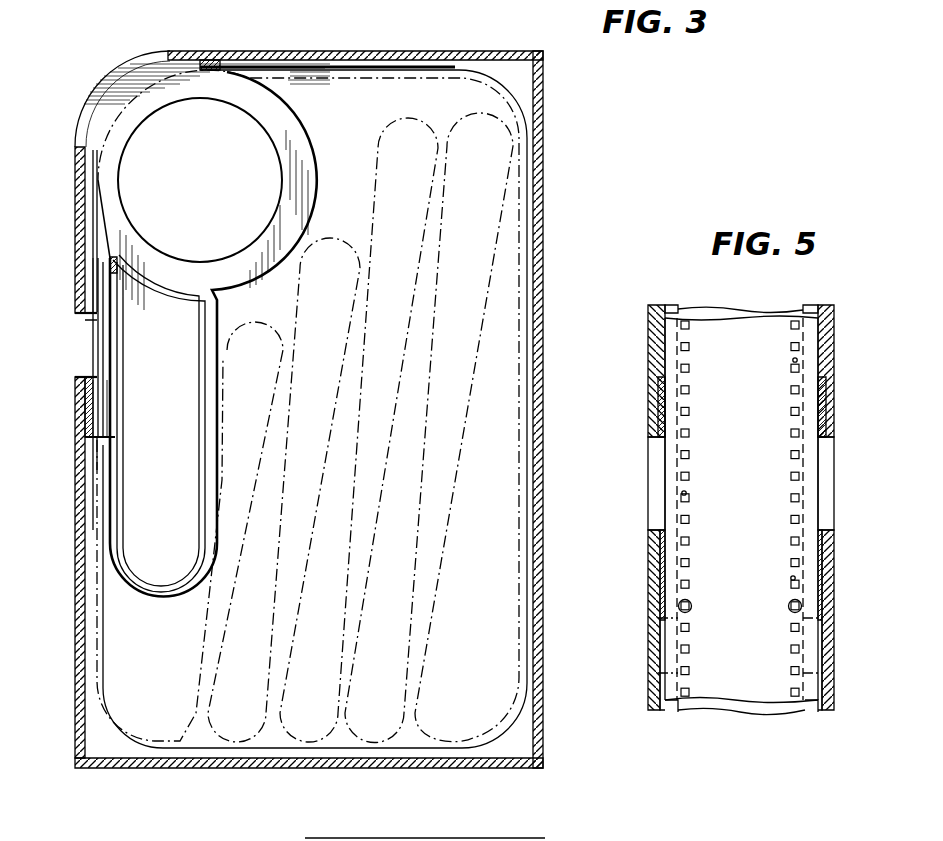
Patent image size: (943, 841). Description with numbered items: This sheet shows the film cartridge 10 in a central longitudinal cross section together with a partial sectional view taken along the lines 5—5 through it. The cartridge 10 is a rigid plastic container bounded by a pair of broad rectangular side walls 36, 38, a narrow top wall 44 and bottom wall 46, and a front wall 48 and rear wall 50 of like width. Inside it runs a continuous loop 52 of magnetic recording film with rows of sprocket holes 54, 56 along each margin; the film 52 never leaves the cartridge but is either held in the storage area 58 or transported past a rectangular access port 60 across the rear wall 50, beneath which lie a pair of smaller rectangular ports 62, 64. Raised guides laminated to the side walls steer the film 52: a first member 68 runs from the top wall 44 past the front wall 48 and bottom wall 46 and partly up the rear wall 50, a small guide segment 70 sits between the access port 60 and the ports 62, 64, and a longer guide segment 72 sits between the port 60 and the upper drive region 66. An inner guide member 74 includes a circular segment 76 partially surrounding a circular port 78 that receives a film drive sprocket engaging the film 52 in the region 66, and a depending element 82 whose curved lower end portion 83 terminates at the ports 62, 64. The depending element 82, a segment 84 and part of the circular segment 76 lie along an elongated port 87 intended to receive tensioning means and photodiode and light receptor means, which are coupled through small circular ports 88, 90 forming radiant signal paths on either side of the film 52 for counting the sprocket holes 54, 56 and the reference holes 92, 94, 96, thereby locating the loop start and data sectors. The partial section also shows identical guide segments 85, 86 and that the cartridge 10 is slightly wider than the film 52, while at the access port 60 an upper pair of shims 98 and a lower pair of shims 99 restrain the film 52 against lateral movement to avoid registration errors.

In FIG. 3, the upper drive region 66 is at (113, 70).
In FIG. 3, the top wall 44 is at (322, 52).
In FIG. 3, the storage area 58 is at (423, 84).
In FIG. 3, the circular segment 76 is at (258, 117).
In FIG. 3, the circular port 78 is at (267, 165).
In FIG. 3, the inner guide member 74 is at (245, 248).
In FIG. 3, the first member 68 is at (528, 249).
In FIG. 3, the front wall 48 is at (541, 377).
In FIG. 3, the guide segment 72 is at (86, 258).
In FIG. 3, the access port 60 is at (86, 337).
In FIG. 3, the guide segment 70 is at (86, 392).
In FIG. 3, the rectangular port 62 is at (87, 450).
In FIG. 5, the rectangular port 62 is at (642, 648).
In FIG. 3, the rear wall 50 is at (76, 630).
In FIG. 3, the bottom wall 46 is at (279, 769).
In FIG. 3, the continuous loop of magnetic recording film 52 is at (100, 333).
In FIG. 5, the continuous loop of magnetic recording film 52 is at (738, 688).
In FIG. 3, the segment 84 is at (104, 363).
In FIG. 5, the segment 84 is at (811, 305).
In FIG. 3, the small circular port 90 is at (107, 412).
In FIG. 5, the small circular port 90 is at (788, 607).
In FIG. 3, the depending element 82 is at (212, 422).
In FIG. 5, the depending element 82 is at (810, 702).
In FIG. 3, the elongated port 87 is at (190, 452).
In FIG. 3, the curved lower end portion 83 is at (160, 598).
In FIG. 3, the section line for FIG. 5 is at (22, 232).
In FIG. 5, the segment 85 is at (669, 304).
In FIG. 5, the side wall 36 is at (652, 354).
In FIG. 5, the side wall 38 is at (836, 358).
In FIG. 5, the shims 98 is at (656, 408).
In FIG. 5, the shims 99 is at (662, 553).
In FIG. 5, the sprocket holes 54 is at (690, 372).
In FIG. 5, the sprocket holes 56 is at (792, 418).
In FIG. 5, the reference hole 94 is at (793, 358).
In FIG. 5, the reference hole 92 is at (687, 493).
In FIG. 5, the reference hole 96 is at (792, 576).
In FIG. 5, the small circular port 88 is at (692, 607).
In FIG. 5, the cartridge 10 is at (735, 531).
In FIG. 5, the rectangular port 64 is at (840, 648).
In FIG. 5, the segment 86 is at (677, 704).